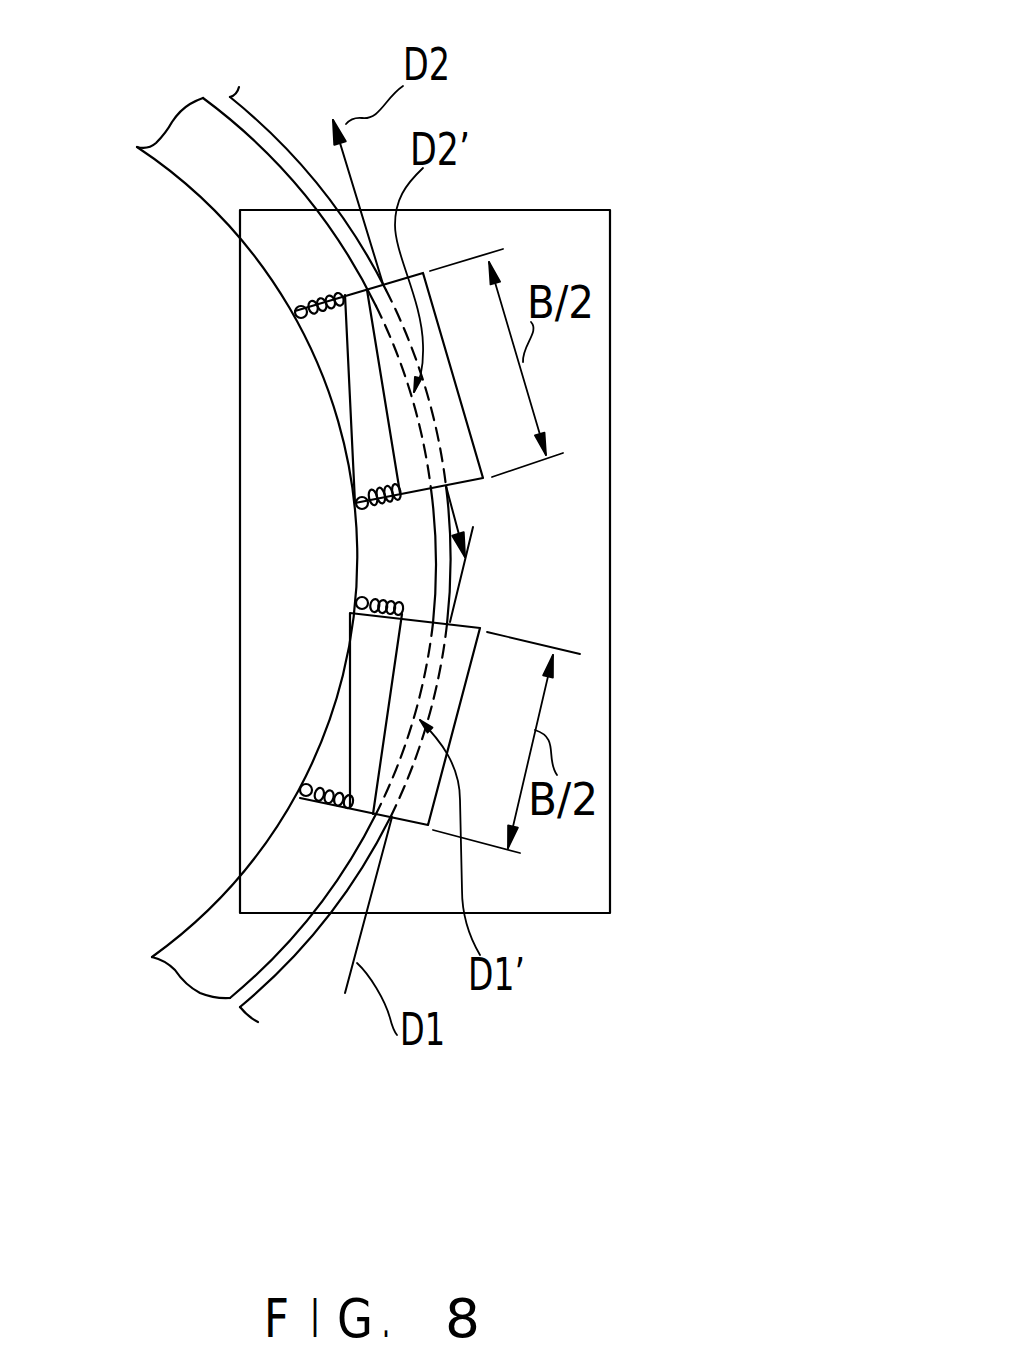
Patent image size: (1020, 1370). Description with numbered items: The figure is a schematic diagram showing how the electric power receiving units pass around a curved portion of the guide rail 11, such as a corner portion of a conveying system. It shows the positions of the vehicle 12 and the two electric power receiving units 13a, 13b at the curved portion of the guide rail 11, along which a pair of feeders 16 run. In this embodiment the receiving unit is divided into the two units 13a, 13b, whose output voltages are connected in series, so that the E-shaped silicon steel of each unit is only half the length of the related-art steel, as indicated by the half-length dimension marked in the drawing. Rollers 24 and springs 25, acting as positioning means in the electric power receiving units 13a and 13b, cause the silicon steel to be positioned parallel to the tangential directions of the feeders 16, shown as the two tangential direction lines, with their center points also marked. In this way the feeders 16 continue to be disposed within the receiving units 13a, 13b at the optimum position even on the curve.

The guide rail 11 is at (277, 233).
The vehicle 12 is at (612, 233).
The electric power receiving unit 13a is at (483, 630).
The electric power receiving unit 13b is at (438, 273).
The feeders 16 is at (254, 124).
The rollers 24 is at (356, 505).
The springs 25 is at (380, 492).